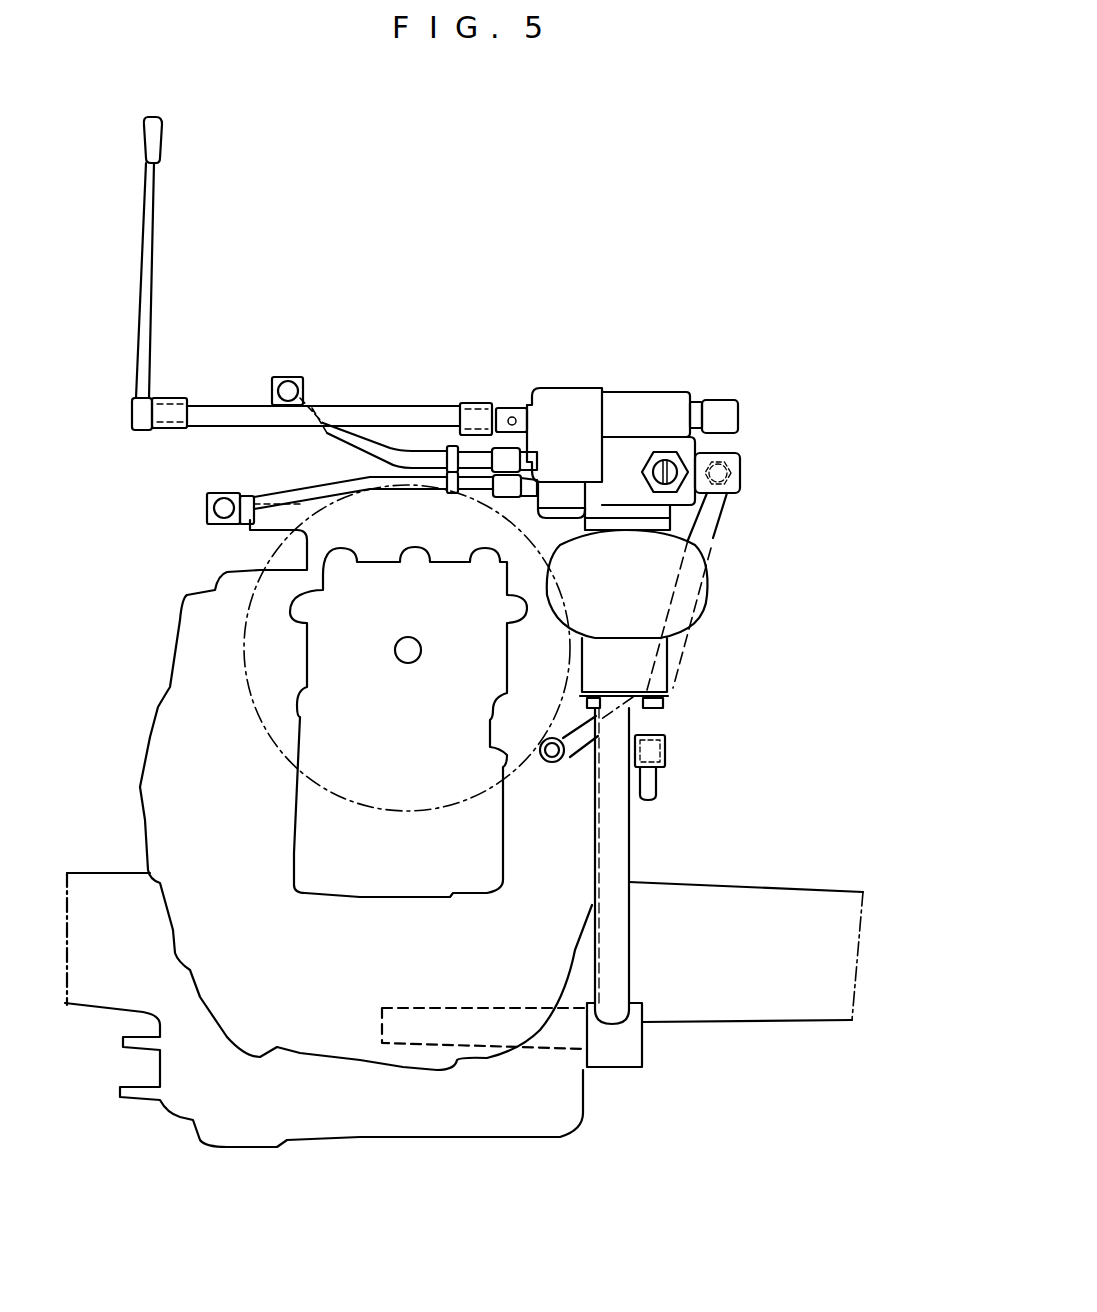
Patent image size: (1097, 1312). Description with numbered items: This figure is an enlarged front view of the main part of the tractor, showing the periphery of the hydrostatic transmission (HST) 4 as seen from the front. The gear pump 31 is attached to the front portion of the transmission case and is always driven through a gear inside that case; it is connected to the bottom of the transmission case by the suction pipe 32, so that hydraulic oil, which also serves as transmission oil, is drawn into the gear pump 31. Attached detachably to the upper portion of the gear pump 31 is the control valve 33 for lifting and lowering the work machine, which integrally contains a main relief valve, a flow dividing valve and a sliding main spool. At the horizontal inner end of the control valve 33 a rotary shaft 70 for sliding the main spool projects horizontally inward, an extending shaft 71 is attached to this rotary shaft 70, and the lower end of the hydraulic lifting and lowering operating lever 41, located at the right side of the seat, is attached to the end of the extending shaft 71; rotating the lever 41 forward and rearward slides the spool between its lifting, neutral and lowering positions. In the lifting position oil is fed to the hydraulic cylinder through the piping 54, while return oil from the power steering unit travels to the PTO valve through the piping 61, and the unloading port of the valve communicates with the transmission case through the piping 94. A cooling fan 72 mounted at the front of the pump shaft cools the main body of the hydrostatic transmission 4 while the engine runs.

The hydrostatic transmission (HST) 4 is at (289, 856).
The gear pump 31 is at (706, 612).
The suction pipe 32 is at (625, 843).
The control valve 33 is at (677, 433).
The hydraulic lifting and lowering operating lever 41 is at (155, 185).
The piping 54 is at (311, 403).
The piping 61 is at (720, 527).
The rotary shaft 70 is at (513, 408).
The extending shaft 71 is at (250, 398).
The cooling fan 72 is at (243, 640).
The piping 94 is at (298, 487).